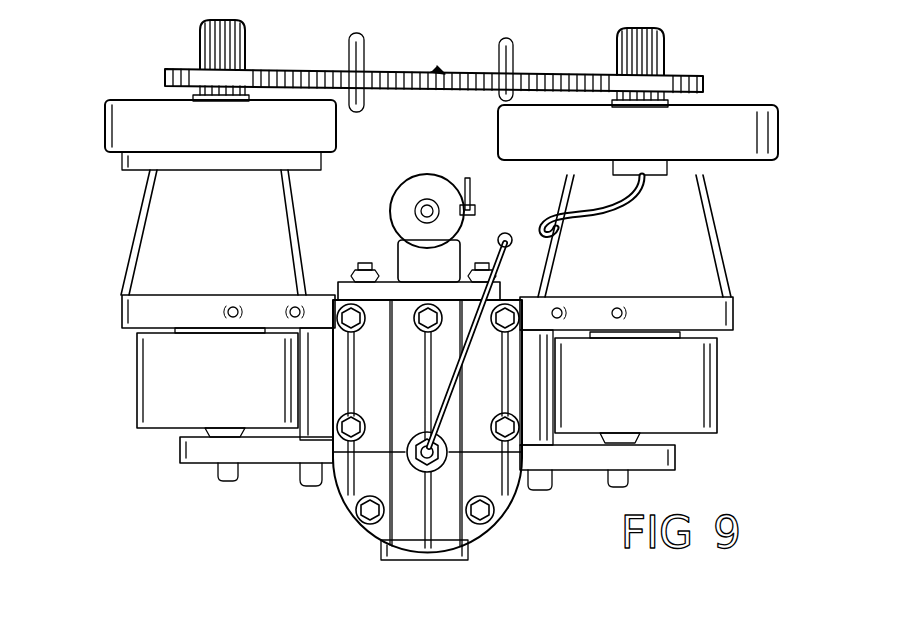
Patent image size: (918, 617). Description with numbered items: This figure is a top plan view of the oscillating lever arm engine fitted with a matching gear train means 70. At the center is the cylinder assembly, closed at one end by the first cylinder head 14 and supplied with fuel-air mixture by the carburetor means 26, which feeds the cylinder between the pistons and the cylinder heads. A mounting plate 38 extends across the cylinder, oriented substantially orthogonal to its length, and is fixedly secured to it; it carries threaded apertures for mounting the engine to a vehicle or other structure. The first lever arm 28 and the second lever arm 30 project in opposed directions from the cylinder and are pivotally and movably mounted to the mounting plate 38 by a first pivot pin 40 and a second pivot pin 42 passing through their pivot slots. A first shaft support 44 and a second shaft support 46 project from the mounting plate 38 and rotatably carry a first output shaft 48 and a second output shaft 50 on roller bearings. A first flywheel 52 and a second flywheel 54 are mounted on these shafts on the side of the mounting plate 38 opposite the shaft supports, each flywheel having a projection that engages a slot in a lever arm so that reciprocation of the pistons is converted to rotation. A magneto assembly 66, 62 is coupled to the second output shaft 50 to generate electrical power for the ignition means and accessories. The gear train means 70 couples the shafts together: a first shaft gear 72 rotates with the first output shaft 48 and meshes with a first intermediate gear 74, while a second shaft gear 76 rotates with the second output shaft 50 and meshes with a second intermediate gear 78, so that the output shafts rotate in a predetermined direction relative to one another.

The first cylinder head 14 is at (479, 479).
The carburetor means 26 is at (254, 151).
The first lever arm 28 is at (280, 455).
The second lever arm 30 is at (655, 472).
The mounting plate 38 is at (736, 320).
The first pivot pin 40 is at (308, 487).
The second pivot pin 42 is at (546, 486).
The first shaft support 44 is at (136, 236).
The second shaft support 46 is at (729, 270).
The first output shaft 48 is at (246, 52).
The second output shaft 50 is at (665, 58).
The first flywheel 52 is at (137, 380).
The second flywheel 54 is at (712, 398).
The magneto assembly 62 is at (147, 100).
The magneto assembly 66 is at (779, 142).
The matching gear train means 70 is at (445, 73).
The first shaft gear 72 is at (122, 77).
The first intermediate gear 74 is at (396, 73).
The second shaft gear 76 is at (600, 75).
The second intermediate gear 78 is at (535, 75).